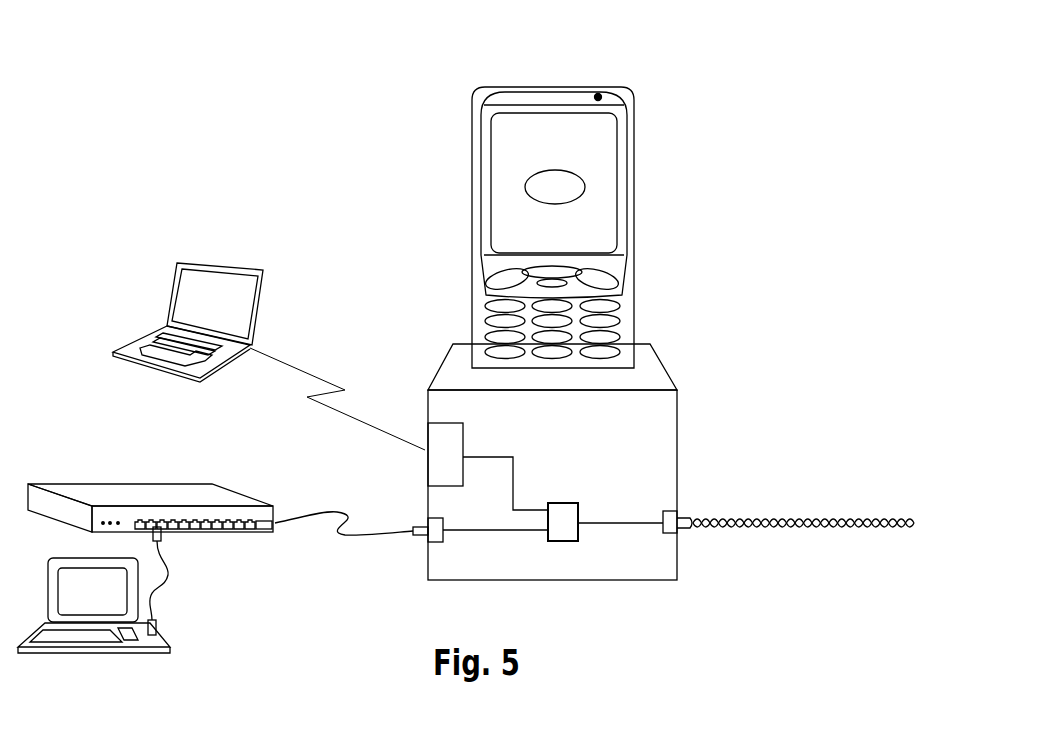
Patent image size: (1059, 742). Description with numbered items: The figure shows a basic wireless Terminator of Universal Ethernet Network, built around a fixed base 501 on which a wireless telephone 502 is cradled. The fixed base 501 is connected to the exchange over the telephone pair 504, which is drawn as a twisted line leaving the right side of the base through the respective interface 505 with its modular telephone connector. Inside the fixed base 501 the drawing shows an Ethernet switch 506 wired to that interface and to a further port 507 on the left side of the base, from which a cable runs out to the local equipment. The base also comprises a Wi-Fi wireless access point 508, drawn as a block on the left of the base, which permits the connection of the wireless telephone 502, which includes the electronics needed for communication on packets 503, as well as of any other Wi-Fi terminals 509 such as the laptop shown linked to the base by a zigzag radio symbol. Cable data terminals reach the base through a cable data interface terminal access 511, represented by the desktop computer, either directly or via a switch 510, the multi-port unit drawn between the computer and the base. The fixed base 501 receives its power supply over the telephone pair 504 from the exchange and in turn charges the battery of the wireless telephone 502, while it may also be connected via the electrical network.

The fixed base 501 is at (692, 405).
The wireless telephone 502 is at (649, 286).
The electronics for communication on packets 503 is at (601, 187).
The telephone pair 504 is at (778, 546).
The interface with RJ-11 connector 505 is at (669, 548).
The Ethernet switch 506 is at (563, 556).
The network connector port 507 is at (432, 556).
The Wi-Fi wireless access point 508 is at (430, 468).
The Wi-Fi terminals 509 is at (238, 386).
The switch 510 is at (208, 551).
The cable data interface terminal access 511 is at (179, 633).